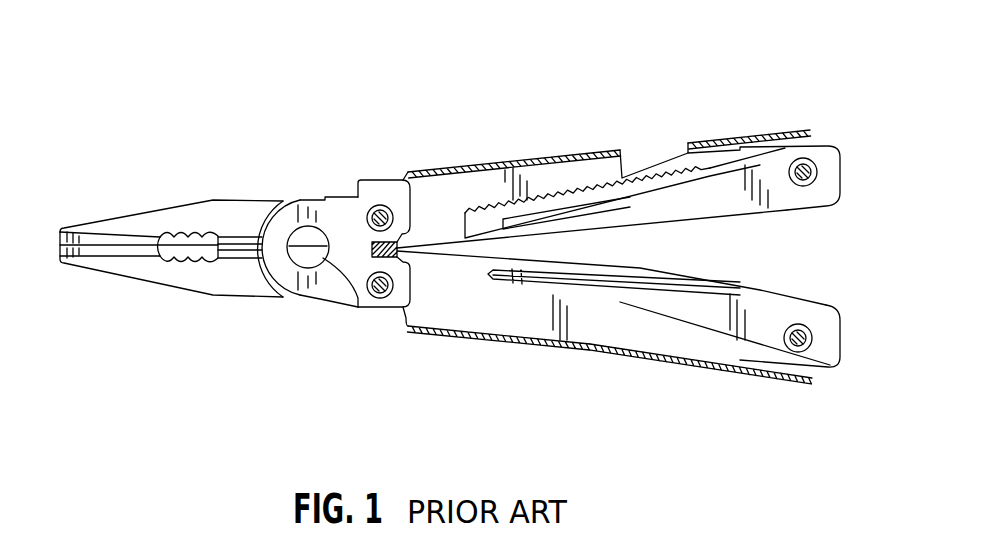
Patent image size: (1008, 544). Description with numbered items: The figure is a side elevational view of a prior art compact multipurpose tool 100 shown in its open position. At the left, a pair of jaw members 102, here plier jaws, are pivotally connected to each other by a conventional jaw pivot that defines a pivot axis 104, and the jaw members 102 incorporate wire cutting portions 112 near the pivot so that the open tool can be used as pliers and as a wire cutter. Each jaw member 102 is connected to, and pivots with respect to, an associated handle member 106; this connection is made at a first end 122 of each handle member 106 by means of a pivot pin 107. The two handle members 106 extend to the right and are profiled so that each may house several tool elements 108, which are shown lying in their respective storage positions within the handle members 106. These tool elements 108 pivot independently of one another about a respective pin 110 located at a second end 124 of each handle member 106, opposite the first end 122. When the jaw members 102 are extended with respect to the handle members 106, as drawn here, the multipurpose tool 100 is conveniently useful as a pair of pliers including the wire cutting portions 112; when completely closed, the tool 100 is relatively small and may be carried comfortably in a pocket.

The compact multipurpose tool 100 is at (633, 93).
The jaw members 102 is at (137, 227).
The pivot axis 104 is at (297, 250).
The handle members 106 is at (470, 170).
The pivot pin 107 is at (370, 210).
The tool elements 108 is at (606, 214).
The pin 110 is at (807, 185).
The wire cutting portions 112 is at (240, 235).
The first end 122 is at (377, 178).
The second end 124 is at (823, 145).